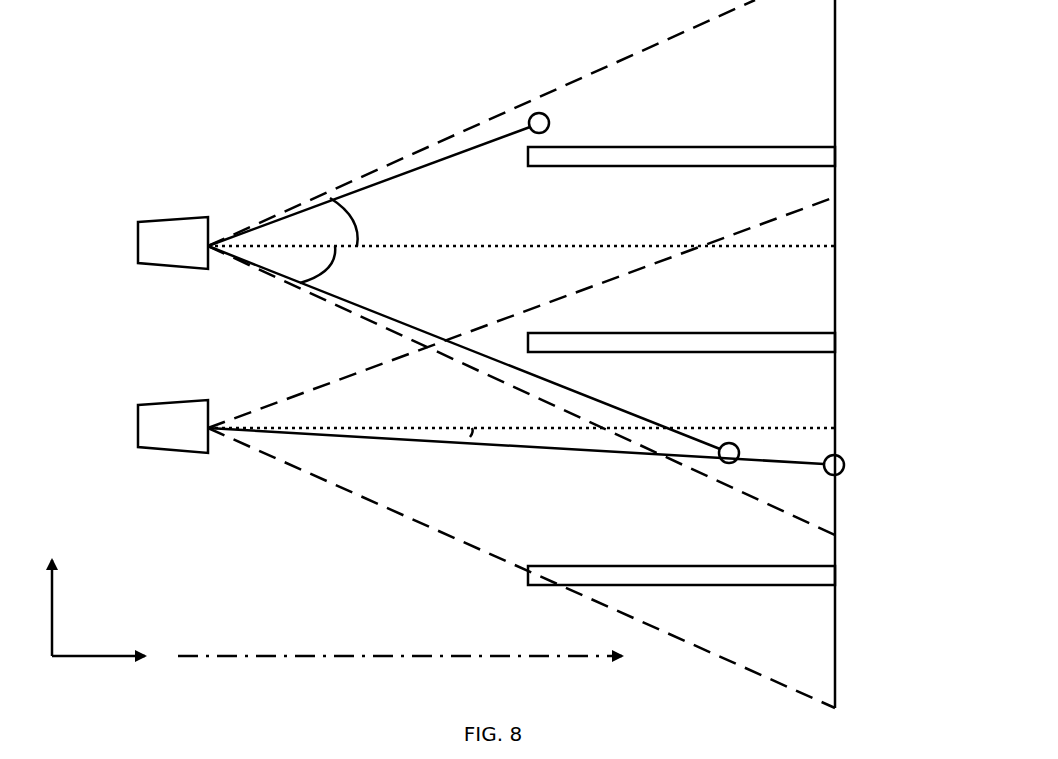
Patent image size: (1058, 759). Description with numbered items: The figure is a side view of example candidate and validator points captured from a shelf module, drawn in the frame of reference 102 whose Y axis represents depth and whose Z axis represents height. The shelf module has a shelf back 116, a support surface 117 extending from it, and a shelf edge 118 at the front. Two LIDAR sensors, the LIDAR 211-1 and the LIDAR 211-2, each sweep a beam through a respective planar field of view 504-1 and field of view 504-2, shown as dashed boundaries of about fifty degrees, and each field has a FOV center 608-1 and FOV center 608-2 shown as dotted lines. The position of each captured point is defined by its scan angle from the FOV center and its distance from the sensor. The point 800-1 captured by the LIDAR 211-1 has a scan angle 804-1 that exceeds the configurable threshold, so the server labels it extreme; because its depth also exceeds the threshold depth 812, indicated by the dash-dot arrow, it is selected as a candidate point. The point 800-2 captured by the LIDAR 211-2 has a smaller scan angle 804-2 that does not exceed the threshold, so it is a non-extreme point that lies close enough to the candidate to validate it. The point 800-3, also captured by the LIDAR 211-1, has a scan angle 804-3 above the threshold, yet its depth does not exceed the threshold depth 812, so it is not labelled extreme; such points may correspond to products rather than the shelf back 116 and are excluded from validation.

The frame of reference 102 is at (105, 657).
The shelf back 116 is at (835, 230).
The support surface 117 is at (751, 333).
The shelf edge 118 is at (528, 568).
The LIDAR 211-1 is at (175, 217).
The LIDAR 211-2 is at (175, 402).
The field of view 504-1 is at (385, 163).
The field of view 504-2 is at (355, 495).
The FOV center 608-1 is at (557, 247).
The FOV center 608-2 is at (748, 428).
The point 800-1 is at (739, 453).
The point 800-2 is at (842, 472).
The point 800-3 is at (533, 113).
The scan angle 804-1 is at (300, 283).
The scan angle 804-2 is at (470, 432).
The scan angle 804-3 is at (330, 198).
The threshold depth 812 is at (325, 656).